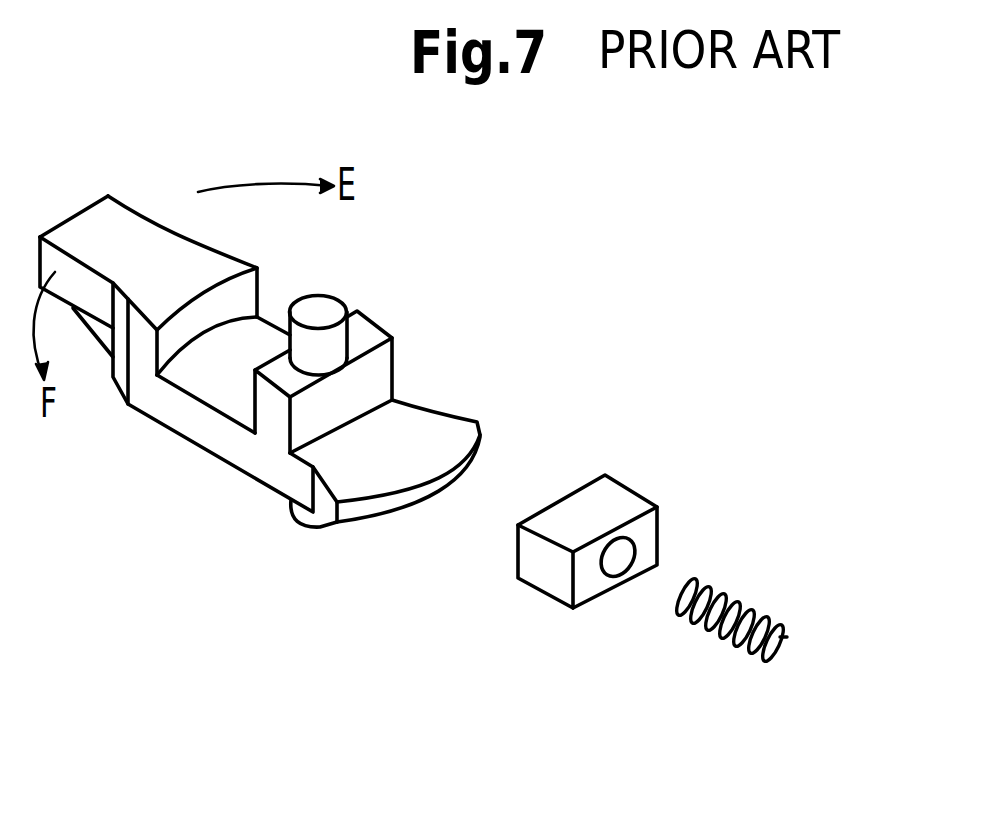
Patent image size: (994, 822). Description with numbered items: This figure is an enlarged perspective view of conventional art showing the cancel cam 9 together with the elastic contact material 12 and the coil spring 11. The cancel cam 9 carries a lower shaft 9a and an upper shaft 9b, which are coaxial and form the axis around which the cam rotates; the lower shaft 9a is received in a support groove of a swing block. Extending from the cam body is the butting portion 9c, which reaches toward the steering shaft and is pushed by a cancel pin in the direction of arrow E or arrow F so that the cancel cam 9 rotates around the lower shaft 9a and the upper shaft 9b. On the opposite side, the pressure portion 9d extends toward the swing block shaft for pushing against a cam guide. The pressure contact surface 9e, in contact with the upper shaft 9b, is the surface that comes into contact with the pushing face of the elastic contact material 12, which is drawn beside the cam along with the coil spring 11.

The cancel cam 9 is at (188, 446).
The lower shaft 9a is at (297, 527).
The upper shaft 9b is at (317, 297).
The butting portion 9c is at (143, 226).
The pressure portion 9d is at (357, 515).
The pressure contact surface 9e is at (375, 370).
The coil spring 11 is at (743, 597).
The elastic contact material 12 is at (628, 488).